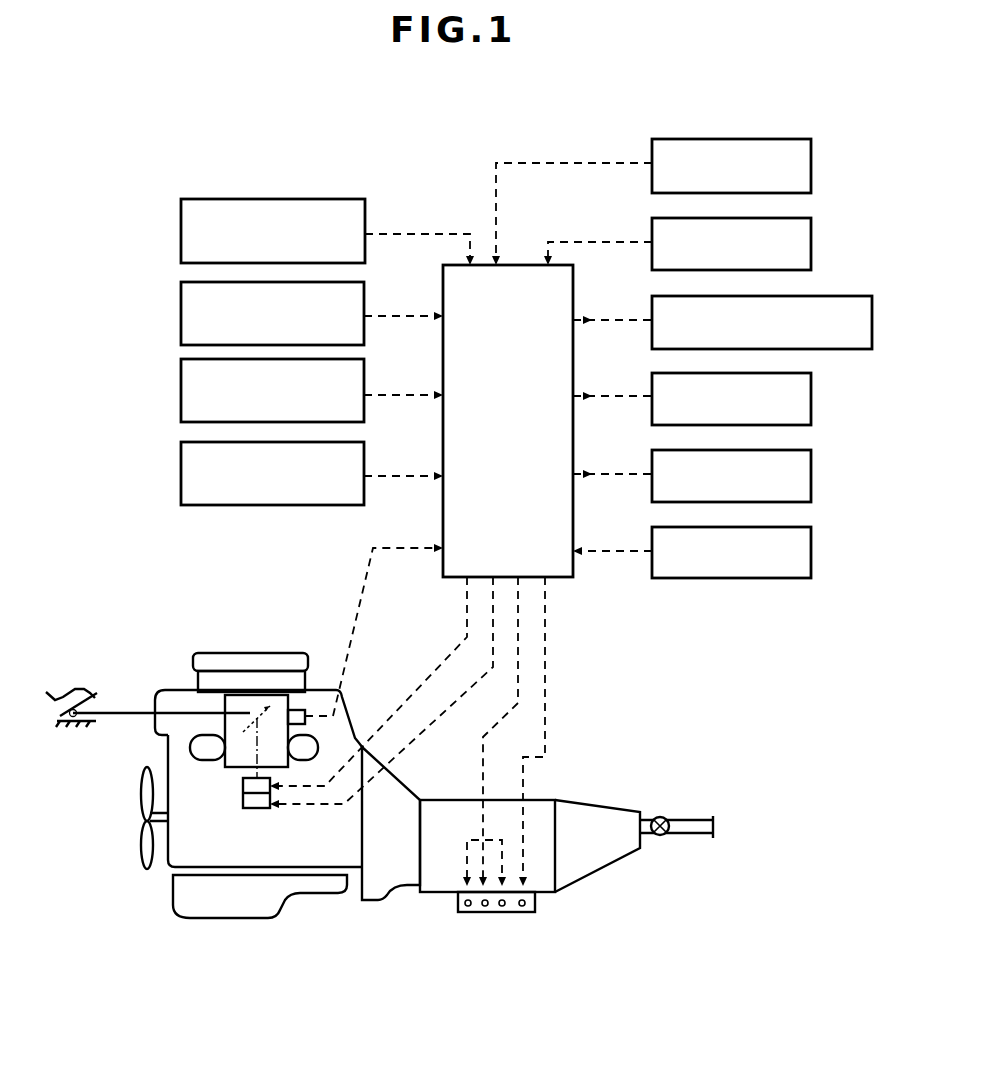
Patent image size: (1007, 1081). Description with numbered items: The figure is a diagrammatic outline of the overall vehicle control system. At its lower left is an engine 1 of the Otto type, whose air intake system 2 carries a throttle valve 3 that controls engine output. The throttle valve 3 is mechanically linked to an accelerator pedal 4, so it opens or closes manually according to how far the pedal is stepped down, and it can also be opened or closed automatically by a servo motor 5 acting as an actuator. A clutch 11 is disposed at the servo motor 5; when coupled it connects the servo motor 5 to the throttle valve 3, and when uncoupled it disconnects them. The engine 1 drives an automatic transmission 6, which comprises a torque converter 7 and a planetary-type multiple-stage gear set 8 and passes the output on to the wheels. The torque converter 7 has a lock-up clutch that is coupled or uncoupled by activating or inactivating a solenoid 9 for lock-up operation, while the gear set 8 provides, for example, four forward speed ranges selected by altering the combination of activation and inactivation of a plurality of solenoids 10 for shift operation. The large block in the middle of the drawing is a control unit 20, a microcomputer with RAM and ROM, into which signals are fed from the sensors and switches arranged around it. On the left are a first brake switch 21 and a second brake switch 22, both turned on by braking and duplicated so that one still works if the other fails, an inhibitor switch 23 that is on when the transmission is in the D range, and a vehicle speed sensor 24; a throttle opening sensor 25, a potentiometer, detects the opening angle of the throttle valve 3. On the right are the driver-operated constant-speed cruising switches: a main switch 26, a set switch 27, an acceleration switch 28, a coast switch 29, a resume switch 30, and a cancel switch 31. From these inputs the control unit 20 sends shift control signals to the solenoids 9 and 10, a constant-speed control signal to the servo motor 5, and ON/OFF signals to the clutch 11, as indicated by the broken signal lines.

The engine 1 is at (215, 857).
The air intake system 2 is at (227, 708).
The throttle valve 3 is at (243, 728).
The accelerator pedal 4 is at (98, 699).
The servo motor 5 is at (243, 802).
The automatic transmission 6 is at (531, 874).
The torque converter 7 is at (382, 880).
The multiple-stage gear set 8 is at (443, 880).
The solenoid for lock-up operation 9 is at (528, 917).
The solenoids for shift operation 10 is at (475, 913).
The clutch 11 is at (243, 786).
The control unit 20 is at (517, 369).
The first brake switch 21 is at (261, 199).
The second brake switch 22 is at (181, 310).
The inhibitor switch 23 is at (181, 391).
The vehicle speed sensor 24 is at (181, 483).
The throttle opening sensor 25 is at (303, 708).
The main switch 26 is at (739, 139).
The set switch 27 is at (811, 238).
The acceleration switch 28 is at (845, 296).
The coast switch 29 is at (811, 398).
The resume switch 30 is at (811, 492).
The cancel switch 31 is at (811, 568).